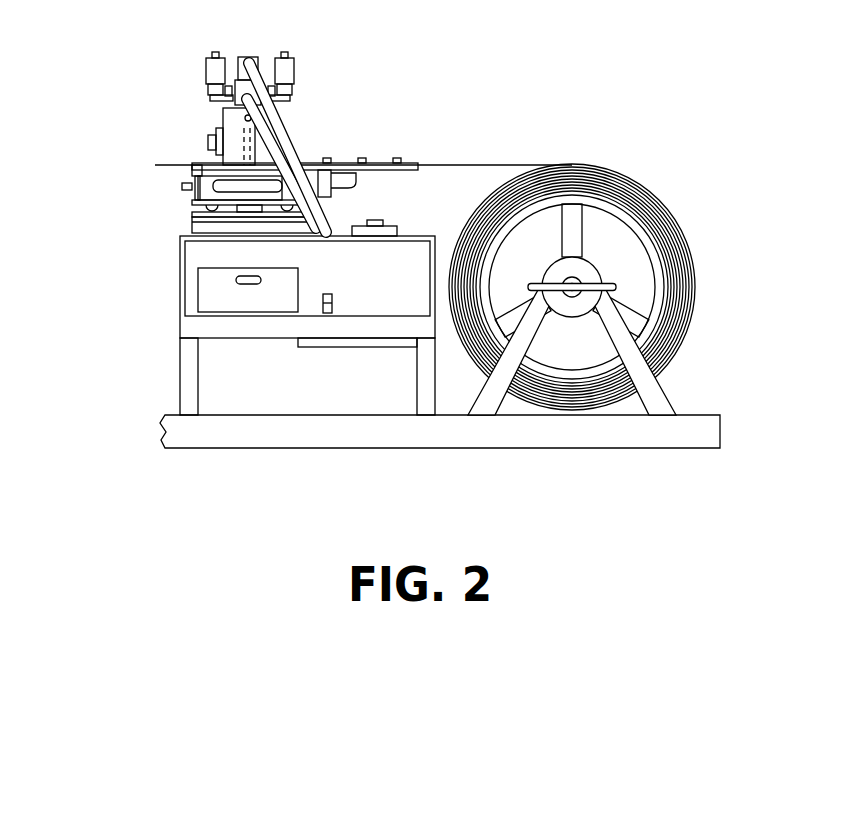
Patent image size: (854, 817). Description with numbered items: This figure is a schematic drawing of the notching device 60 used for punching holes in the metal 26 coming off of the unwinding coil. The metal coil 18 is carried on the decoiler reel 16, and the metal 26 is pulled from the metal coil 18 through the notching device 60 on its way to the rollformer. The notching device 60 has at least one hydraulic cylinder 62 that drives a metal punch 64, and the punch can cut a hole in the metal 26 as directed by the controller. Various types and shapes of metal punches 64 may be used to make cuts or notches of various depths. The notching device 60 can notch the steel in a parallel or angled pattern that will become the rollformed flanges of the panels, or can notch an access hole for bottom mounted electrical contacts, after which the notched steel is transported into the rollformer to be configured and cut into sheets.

The notching device 60 is at (114, 90).
The hydraulic cylinders 62 is at (248, 62).
The metal punches 64 is at (236, 140).
The metal 26 is at (493, 164).
The metal coil 18 is at (600, 170).
The decoiler reel for metal 16 is at (654, 200).